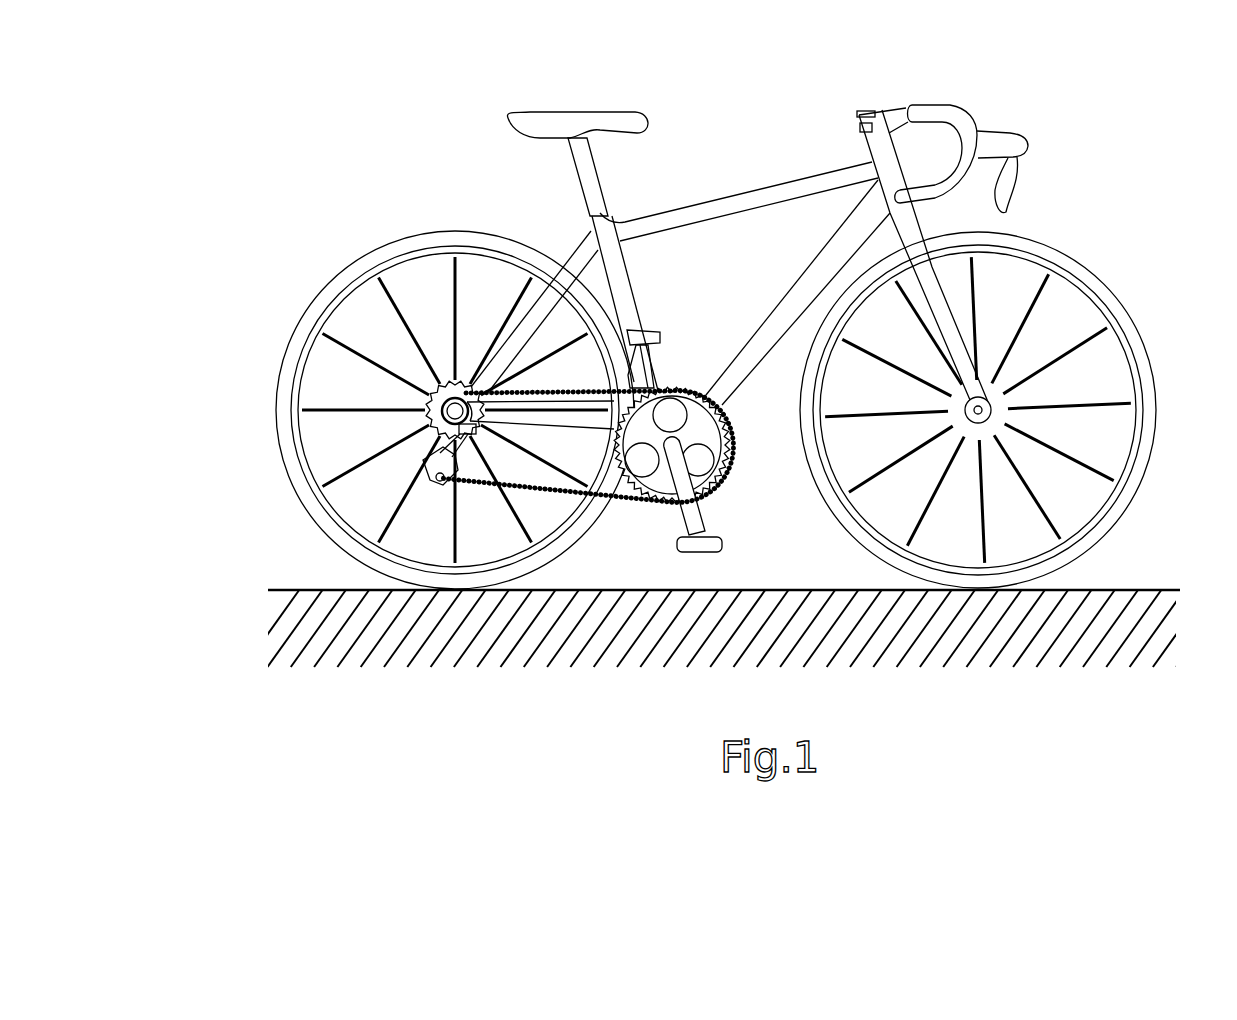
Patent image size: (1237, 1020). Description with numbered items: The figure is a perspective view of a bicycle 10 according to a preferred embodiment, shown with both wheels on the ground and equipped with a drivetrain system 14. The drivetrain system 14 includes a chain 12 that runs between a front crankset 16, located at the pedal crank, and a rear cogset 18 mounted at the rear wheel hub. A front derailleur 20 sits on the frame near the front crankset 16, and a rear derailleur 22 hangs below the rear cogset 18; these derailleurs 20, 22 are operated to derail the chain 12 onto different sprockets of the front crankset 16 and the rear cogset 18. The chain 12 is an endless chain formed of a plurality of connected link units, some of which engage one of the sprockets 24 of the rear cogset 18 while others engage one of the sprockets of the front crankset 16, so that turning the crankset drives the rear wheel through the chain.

The bicycle 10 is at (695, 427).
The chain 12 is at (582, 462).
The drivetrain system 14 is at (535, 383).
The front crankset 16 is at (718, 482).
The rear cogset 18 is at (427, 397).
The front derailleur 20 is at (640, 373).
The rear derailleur 22 is at (427, 465).
The sprocket 24 is at (427, 423).